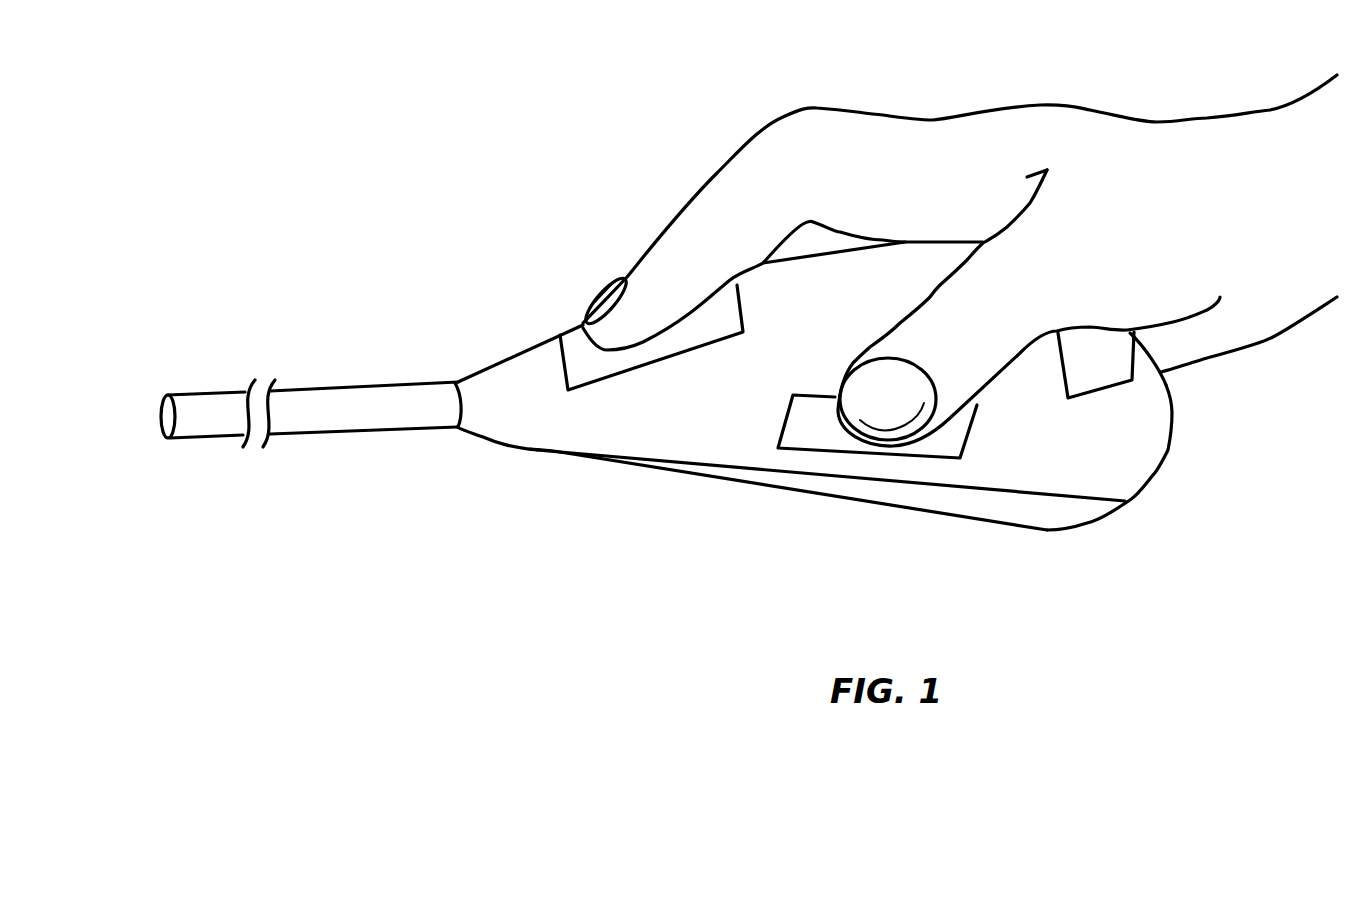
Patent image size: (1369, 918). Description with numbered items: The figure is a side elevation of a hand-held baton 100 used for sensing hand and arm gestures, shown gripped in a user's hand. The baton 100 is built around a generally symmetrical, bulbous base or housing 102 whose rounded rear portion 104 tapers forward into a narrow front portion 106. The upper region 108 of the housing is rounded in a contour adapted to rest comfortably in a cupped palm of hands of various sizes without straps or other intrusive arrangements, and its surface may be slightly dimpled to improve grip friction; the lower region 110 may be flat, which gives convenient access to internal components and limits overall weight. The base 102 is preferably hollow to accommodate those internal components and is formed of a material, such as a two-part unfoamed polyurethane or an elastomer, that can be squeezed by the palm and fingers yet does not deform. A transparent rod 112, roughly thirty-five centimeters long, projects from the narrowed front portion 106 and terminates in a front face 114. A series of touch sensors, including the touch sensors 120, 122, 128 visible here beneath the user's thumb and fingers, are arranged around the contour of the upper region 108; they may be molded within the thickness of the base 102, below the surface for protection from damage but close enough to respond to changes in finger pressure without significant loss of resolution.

The baton 100 is at (436, 496).
The base or housing 102 is at (1138, 455).
The rounded rear portion 104 is at (1148, 487).
The narrow front portion 106 is at (502, 394).
The upper region 108 is at (538, 338).
The lower region 110 is at (948, 503).
The transparent rod 112 is at (313, 385).
The front face 114 is at (164, 410).
The touch sensor 120 is at (791, 419).
The touch sensor 122 is at (742, 307).
The touch sensor 128 is at (1110, 368).